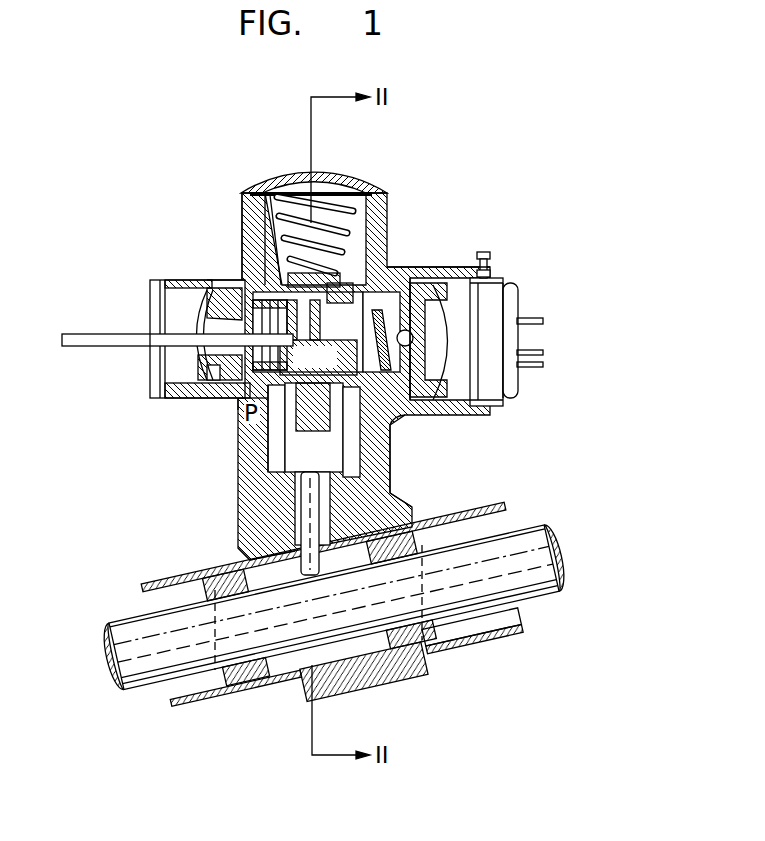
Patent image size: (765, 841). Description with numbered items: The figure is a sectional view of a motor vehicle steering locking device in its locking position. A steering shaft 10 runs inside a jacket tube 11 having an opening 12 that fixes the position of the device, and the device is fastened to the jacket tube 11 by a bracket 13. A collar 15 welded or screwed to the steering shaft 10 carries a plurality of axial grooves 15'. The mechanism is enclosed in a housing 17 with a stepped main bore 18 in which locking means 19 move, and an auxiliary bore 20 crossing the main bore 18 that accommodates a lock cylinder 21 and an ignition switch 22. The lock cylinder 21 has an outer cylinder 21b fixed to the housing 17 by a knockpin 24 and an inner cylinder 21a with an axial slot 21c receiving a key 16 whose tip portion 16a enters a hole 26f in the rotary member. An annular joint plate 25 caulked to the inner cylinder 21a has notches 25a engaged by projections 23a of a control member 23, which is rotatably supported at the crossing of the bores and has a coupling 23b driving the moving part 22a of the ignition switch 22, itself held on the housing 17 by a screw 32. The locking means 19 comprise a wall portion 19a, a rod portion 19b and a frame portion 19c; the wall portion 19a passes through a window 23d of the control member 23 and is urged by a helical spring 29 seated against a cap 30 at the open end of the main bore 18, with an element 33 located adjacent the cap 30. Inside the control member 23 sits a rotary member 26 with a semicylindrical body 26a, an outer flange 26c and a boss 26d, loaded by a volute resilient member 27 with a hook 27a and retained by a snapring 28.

The steering shaft 10 is at (140, 637).
The jacket tube 11 is at (228, 690).
The opening 12 is at (277, 547).
The bracket 13 is at (401, 683).
The collar 15 is at (377, 672).
The axial grooves 15' is at (318, 603).
The key 16 is at (118, 338).
The rod diaphragm 16a is at (212, 358).
The housing 17 is at (413, 510).
The stepped main bore 18 is at (352, 440).
The locking means 19 is at (388, 474).
The wall portion 19a is at (308, 329).
The rod portion 19b is at (307, 535).
The frame portion 19c is at (362, 462).
The auxiliary bore 20 is at (420, 330).
The lock cylinder 21 is at (172, 358).
The inner cylinder 21a is at (172, 280).
The outer cylinder 21b is at (190, 397).
The axial slot 21c is at (213, 280).
The ignition switch 22 is at (513, 373).
The moving part 22a is at (498, 405).
The control member 23 is at (394, 277).
The projections 23a is at (242, 235).
The coupling 23b is at (508, 288).
The window 23d is at (390, 237).
The knockpin 24 is at (212, 398).
The annular joint plate 25 is at (235, 420).
The notches 25a is at (242, 260).
The rotary member 26 is at (258, 486).
The semicylindrical body 26a is at (305, 427).
The outer circular flange 26c is at (262, 442).
The boss 26d is at (402, 430).
The hole 26f is at (264, 192).
The resilient member 27 is at (422, 268).
The hook 27a is at (407, 427).
The snapring 28 is at (160, 376).
The spring 29 is at (365, 195).
The cap 30 is at (357, 180).
The screw 32 is at (486, 252).
The spring seat 33 is at (279, 182).